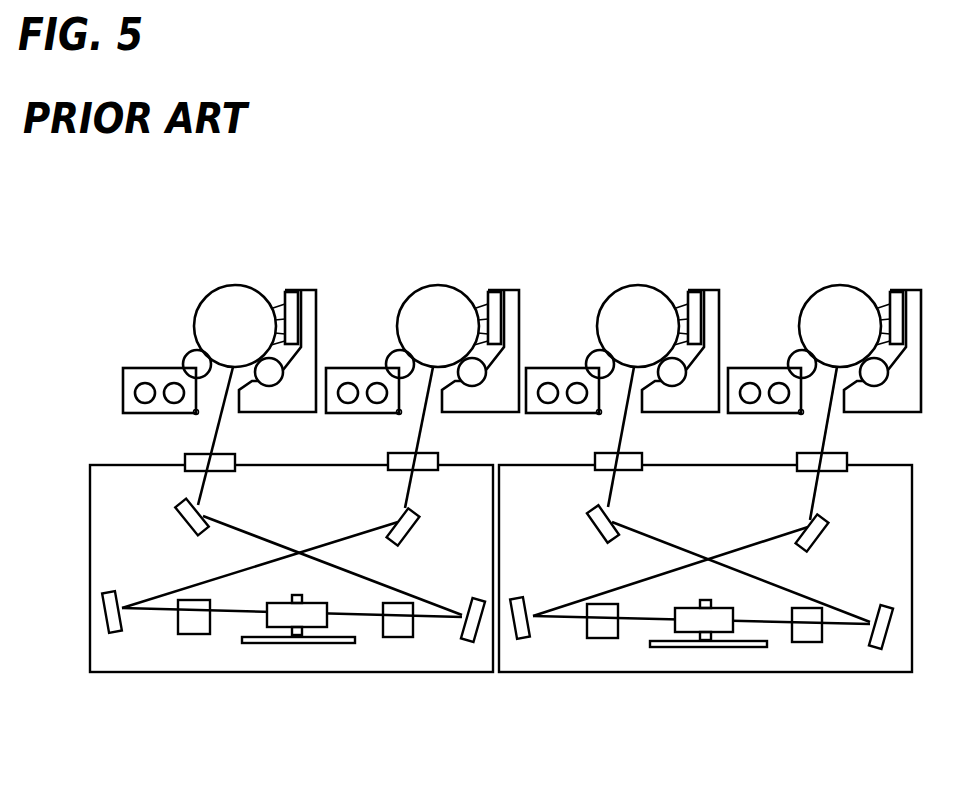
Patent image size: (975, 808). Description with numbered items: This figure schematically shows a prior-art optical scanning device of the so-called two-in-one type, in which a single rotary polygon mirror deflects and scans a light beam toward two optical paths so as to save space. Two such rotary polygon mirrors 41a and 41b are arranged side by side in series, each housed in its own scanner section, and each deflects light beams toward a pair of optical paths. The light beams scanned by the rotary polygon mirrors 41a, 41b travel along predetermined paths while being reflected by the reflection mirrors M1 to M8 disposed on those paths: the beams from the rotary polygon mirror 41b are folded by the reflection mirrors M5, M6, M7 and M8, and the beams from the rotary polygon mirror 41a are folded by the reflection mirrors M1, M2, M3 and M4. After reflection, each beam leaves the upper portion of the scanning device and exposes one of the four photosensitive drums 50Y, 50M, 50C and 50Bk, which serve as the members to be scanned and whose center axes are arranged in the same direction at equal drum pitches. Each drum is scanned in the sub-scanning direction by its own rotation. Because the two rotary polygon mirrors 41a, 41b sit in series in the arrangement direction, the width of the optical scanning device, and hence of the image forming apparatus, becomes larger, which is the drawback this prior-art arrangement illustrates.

The photosensitive drum 50Y is at (230, 300).
The photosensitive drum 50M is at (437, 306).
The photosensitive drum 50C is at (638, 300).
The photosensitive drum 50Bk is at (845, 300).
The reflection mirror M1 is at (877, 637).
The reflection mirror M2 is at (588, 516).
The reflection mirror M3 is at (533, 632).
The reflection mirror M4 is at (813, 537).
The reflection mirror M5 is at (458, 632).
The reflection mirror M6 is at (190, 523).
The reflection mirror M7 is at (122, 608).
The reflection mirror M8 is at (415, 513).
The rotary polygon mirror 41a is at (690, 628).
The rotary polygon mirror 41b is at (277, 620).